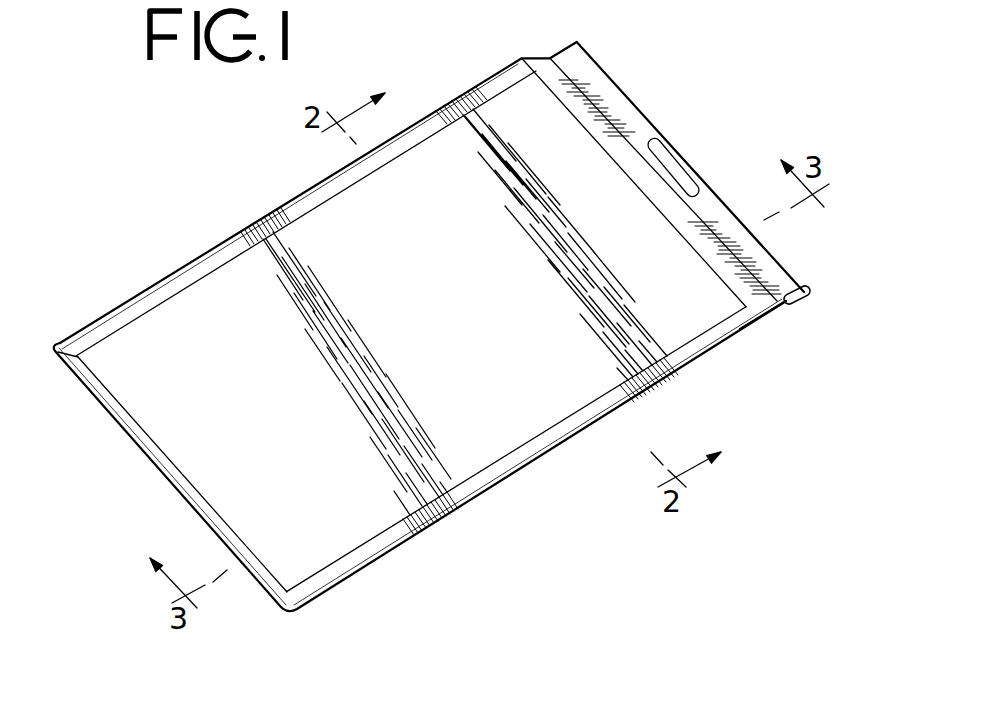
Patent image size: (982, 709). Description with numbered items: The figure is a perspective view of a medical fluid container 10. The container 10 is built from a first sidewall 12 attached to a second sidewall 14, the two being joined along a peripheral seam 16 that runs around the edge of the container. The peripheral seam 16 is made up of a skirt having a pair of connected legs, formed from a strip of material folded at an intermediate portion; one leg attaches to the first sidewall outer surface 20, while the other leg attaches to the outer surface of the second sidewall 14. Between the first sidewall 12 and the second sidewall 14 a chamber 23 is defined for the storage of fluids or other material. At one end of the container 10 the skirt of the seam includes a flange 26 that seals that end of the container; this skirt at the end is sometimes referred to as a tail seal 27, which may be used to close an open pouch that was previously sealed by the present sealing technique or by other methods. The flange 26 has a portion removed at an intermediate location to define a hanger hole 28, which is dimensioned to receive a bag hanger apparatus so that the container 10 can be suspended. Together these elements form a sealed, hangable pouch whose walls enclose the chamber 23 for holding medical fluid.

The container 10 is at (196, 208).
The first sidewall 12 is at (118, 350).
The second sidewall 14 is at (116, 427).
The peripheral seam 16 is at (548, 458).
The first sidewall outer surface 20 is at (294, 366).
The chamber 23 is at (429, 176).
The flange 26 is at (808, 290).
The tail seal 27 is at (803, 310).
The hanger hole 28 is at (672, 170).